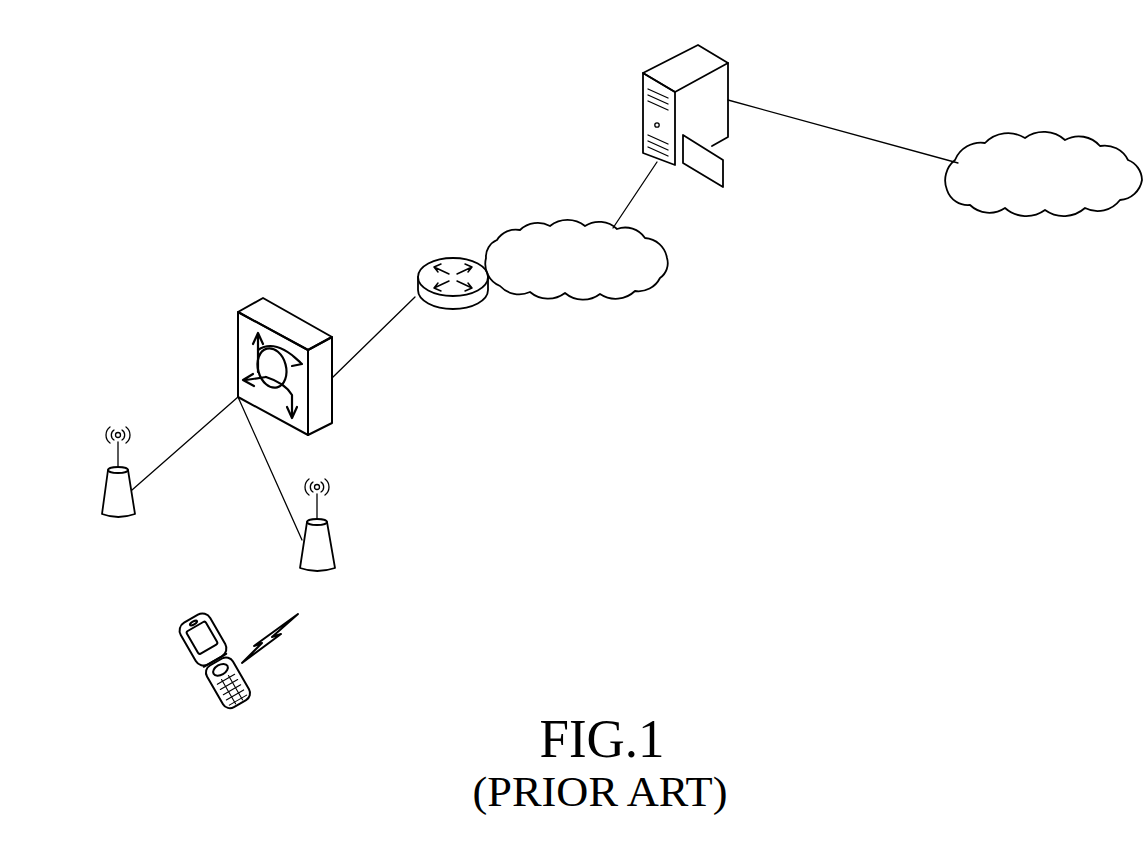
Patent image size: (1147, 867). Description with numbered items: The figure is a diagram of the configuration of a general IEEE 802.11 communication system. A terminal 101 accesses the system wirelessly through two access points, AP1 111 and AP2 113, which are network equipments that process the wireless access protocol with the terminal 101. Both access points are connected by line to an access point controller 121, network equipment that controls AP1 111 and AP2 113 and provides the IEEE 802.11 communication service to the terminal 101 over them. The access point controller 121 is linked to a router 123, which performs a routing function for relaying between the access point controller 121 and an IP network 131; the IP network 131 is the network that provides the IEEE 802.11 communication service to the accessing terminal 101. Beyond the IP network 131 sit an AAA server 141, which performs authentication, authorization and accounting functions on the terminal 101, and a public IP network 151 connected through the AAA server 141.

The terminal 101 is at (237, 690).
The AP1 111 is at (103, 493).
The AP2 113 is at (334, 545).
The access point controller 121 is at (293, 313).
The router 123 is at (452, 257).
The IP network 131 is at (572, 223).
The AAA server 141 is at (713, 53).
The public IP network 151 is at (1040, 137).